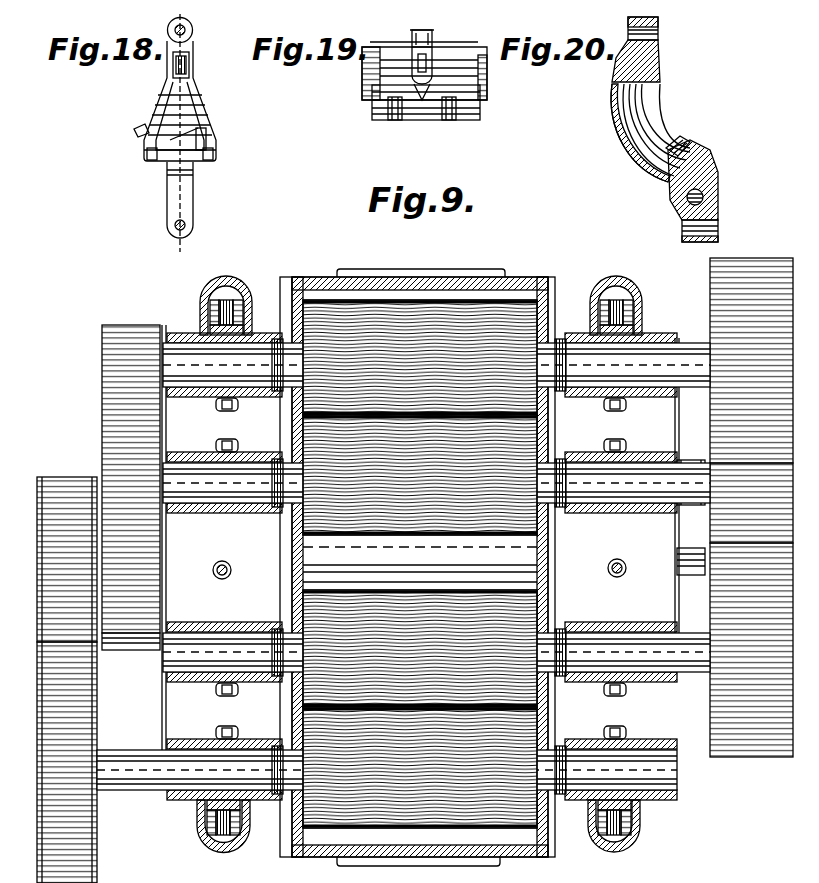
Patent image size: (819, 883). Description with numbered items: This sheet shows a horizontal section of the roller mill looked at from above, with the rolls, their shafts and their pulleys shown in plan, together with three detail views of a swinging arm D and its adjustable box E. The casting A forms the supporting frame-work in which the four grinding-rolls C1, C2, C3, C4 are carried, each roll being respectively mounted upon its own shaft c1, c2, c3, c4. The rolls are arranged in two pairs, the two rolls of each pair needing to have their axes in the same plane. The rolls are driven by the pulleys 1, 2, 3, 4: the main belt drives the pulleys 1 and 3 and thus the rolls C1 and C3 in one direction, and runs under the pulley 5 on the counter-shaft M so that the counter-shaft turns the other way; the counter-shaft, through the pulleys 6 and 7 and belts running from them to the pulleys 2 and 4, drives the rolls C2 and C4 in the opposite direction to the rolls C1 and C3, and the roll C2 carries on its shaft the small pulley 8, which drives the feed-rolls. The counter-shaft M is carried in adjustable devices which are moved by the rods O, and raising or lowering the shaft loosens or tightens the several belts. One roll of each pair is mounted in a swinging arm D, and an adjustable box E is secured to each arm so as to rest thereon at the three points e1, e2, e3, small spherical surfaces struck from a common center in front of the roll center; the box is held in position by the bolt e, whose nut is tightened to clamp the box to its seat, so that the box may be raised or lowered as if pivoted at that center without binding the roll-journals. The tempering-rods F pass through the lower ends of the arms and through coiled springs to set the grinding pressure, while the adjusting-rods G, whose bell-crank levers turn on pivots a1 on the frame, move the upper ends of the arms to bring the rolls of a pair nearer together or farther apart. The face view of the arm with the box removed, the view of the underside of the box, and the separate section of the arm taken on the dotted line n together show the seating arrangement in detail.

In FIG. 9, the casting A is at (300, 277).
In FIG. 9, the grinding-roll C1 is at (420, 357).
In FIG. 9, the grinding-roll C2 is at (420, 475).
In FIG. 9, the grinding-roll C3 is at (420, 648).
In FIG. 9, the grinding-roll C4 is at (420, 767).
In FIG. 9, the roll shaft c1 is at (436, 365).
In FIG. 9, the roll shaft c2 is at (436, 483).
In FIG. 9, the roll shaft c3 is at (436, 652).
In FIG. 9, the roll shaft c4 is at (387, 770).
In FIG. 18, the swinging arm D is at (205, 108).
In FIG. 20, the swinging arm D is at (612, 104).
In FIG. 9, the swinging arm D is at (200, 296).
In FIG. 19, the adjustable box E is at (446, 62).
In FIG. 9, the adjustable box E is at (185, 333).
In FIG. 18, the bolt e is at (133, 128).
In FIG. 20, the bolt e is at (678, 146).
In FIG. 9, the bolt e is at (232, 296).
In FIG. 18, the bearing point e1 is at (190, 62).
In FIG. 19, the bearing point e1 is at (412, 31).
In FIG. 20, the bearing point e1 is at (660, 66).
In FIG. 18, the bearing point e2 is at (147, 154).
In FIG. 19, the bearing point e2 is at (452, 120).
In FIG. 18, the bearing point e3 is at (213, 156).
In FIG. 19, the bearing point e3 is at (392, 120).
In FIG. 20, the bearing point e3 is at (712, 152).
In FIG. 9, the adjusting rod O is at (230, 565).
In FIG. 9, the counter-shaft M is at (690, 548).
In FIG. 18, the adjusting rod G is at (193, 31).
In FIG. 18, the tempering-rod F is at (193, 226).
In FIG. 18, the pivot a1 is at (206, 136).
In FIG. 18, the section line n is at (179, 133).
In FIG. 9, the pulley 1 is at (751, 360).
In FIG. 9, the pulley 2 is at (131, 479).
In FIG. 9, the pulley 3 is at (751, 650).
In FIG. 9, the pulley 4 is at (67, 762).
In FIG. 9, the pulley 5 is at (751, 503).
In FIG. 9, the pulley 6 is at (135, 650).
In FIG. 9, the pulley 7 is at (67, 559).
In FIG. 9, the pulley 8 is at (691, 482).